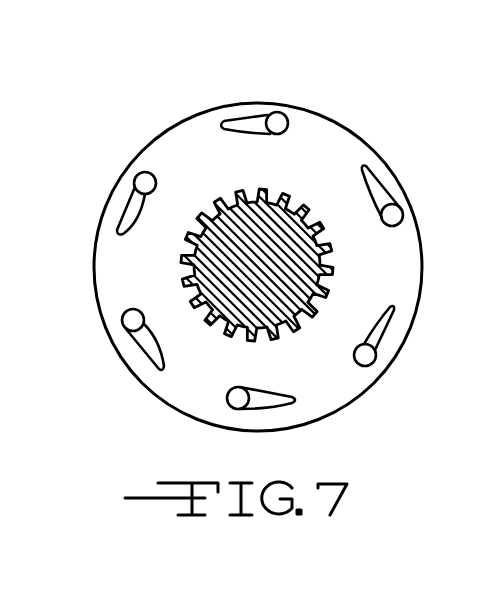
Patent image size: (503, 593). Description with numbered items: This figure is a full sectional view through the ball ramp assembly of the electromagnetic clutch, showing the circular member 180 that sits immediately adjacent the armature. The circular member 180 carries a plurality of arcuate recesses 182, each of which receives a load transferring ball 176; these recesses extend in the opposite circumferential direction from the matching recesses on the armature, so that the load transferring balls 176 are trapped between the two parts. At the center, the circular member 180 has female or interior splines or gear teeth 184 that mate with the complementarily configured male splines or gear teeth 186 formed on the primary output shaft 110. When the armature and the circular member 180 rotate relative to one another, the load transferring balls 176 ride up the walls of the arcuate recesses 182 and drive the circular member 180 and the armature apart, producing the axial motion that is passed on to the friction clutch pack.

The primary output shaft 110 is at (220, 218).
The load transferring ball 176 is at (236, 399).
The circular member 180 is at (195, 143).
The arcuate recesses 182 is at (254, 117).
The female or interior splines or gear teeth 184 is at (185, 250).
The male splines or gear teeth 186 is at (187, 282).